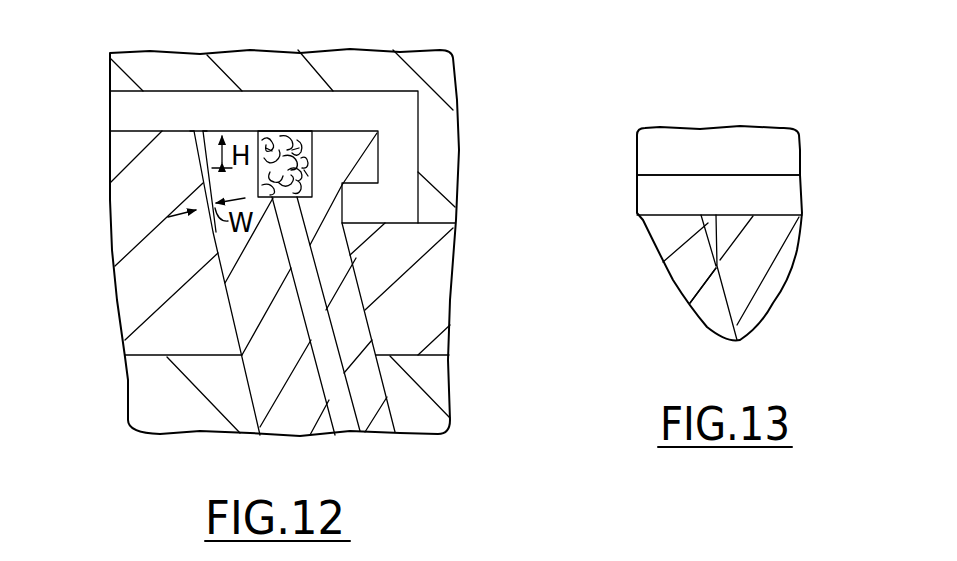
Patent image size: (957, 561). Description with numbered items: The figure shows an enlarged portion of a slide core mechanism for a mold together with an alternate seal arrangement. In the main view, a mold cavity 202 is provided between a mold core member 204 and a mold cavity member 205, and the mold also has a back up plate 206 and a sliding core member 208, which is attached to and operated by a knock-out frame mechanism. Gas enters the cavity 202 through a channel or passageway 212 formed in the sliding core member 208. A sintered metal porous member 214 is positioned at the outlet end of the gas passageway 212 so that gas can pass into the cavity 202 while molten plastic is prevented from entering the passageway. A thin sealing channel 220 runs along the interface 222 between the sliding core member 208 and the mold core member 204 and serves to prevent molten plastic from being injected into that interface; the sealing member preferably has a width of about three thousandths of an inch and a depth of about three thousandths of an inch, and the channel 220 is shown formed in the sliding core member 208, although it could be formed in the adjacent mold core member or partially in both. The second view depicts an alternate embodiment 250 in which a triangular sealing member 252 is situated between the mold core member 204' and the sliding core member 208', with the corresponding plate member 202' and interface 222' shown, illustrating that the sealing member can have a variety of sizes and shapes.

In FIG. 12, the mold cavity 202 is at (244, 157).
In FIG. 12, the mold core member 204 is at (437, 327).
In FIG. 12, the mold cavity member 205 is at (447, 67).
In FIG. 12, the back up plate 206 is at (438, 381).
In FIG. 12, the sliding core member 208 is at (249, 283).
In FIG. 12, the channel or passageway 212 is at (328, 344).
In FIG. 12, the sintered metal porous member 214 is at (303, 131).
In FIG. 12, the thin sealing channel 220 is at (193, 150).
In FIG. 12, the interface 222 is at (197, 283).
In FIG. 13, the alternate embodiment 250 is at (746, 90).
In FIG. 13, the triangular sealing member 252 is at (733, 190).
In FIG. 13, the plate member 202' is at (760, 193).
In FIG. 13, the mold core member 204' is at (669, 312).
In FIG. 13, the sliding core member 208' is at (798, 270).
In FIG. 13, the slot 222' is at (658, 263).